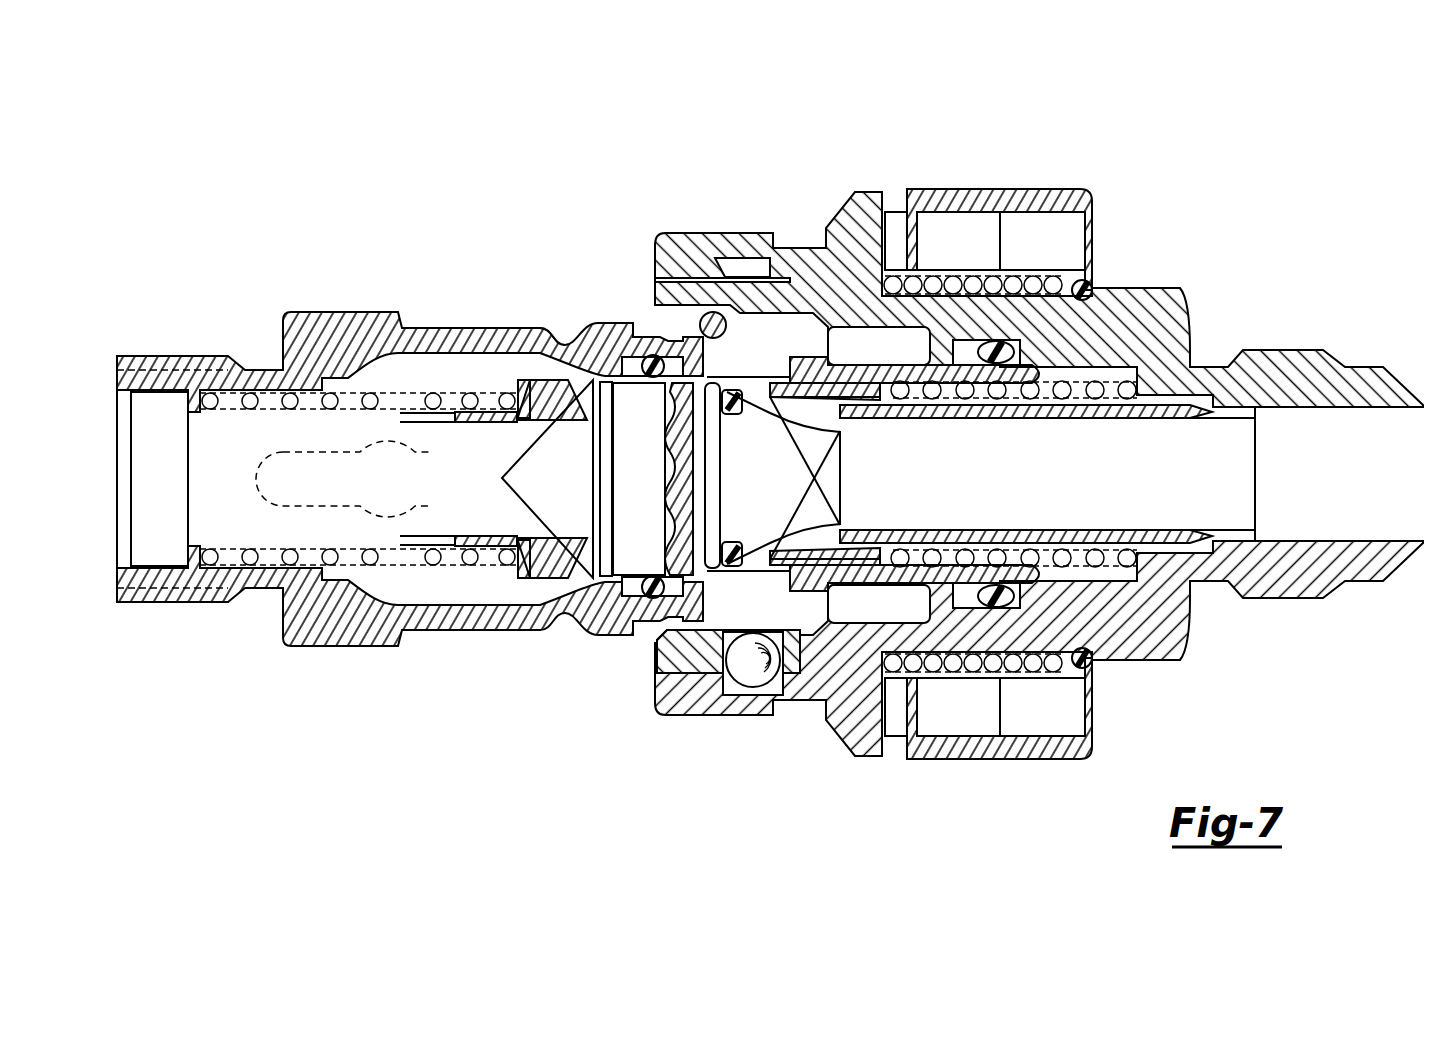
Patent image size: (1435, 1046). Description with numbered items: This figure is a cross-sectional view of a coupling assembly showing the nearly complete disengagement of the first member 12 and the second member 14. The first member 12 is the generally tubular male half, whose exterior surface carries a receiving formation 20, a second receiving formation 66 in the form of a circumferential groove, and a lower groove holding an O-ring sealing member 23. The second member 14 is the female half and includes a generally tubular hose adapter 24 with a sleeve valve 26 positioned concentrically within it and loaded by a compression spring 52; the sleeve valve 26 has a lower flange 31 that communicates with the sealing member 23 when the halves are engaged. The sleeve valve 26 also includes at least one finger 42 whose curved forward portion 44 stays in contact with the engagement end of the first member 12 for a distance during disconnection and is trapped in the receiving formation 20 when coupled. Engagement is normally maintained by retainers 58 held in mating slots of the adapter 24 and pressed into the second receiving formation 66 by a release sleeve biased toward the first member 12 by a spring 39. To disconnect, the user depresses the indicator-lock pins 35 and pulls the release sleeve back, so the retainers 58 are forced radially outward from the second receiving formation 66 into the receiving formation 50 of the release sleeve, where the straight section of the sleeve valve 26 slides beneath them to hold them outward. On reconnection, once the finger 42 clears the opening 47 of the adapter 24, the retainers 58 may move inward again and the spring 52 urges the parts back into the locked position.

The first member 12 is at (424, 262).
The second member 14 is at (1013, 427).
The receiving formation 20 is at (667, 338).
The sealing member 23 is at (653, 378).
The hose adapter 24 is at (798, 283).
The sleeve valve 26 is at (863, 384).
The lower flange 31 is at (772, 410).
The indicator-lock pins 35 is at (975, 186).
The spring 39 is at (1053, 282).
The finger 42 is at (778, 334).
The forward portion 44 is at (708, 318).
The opening 47 is at (728, 640).
The receiving formation 50 is at (732, 265).
The compression spring 52 is at (1100, 394).
The retainers 58 is at (763, 655).
The second receiving formation 66 is at (560, 345).